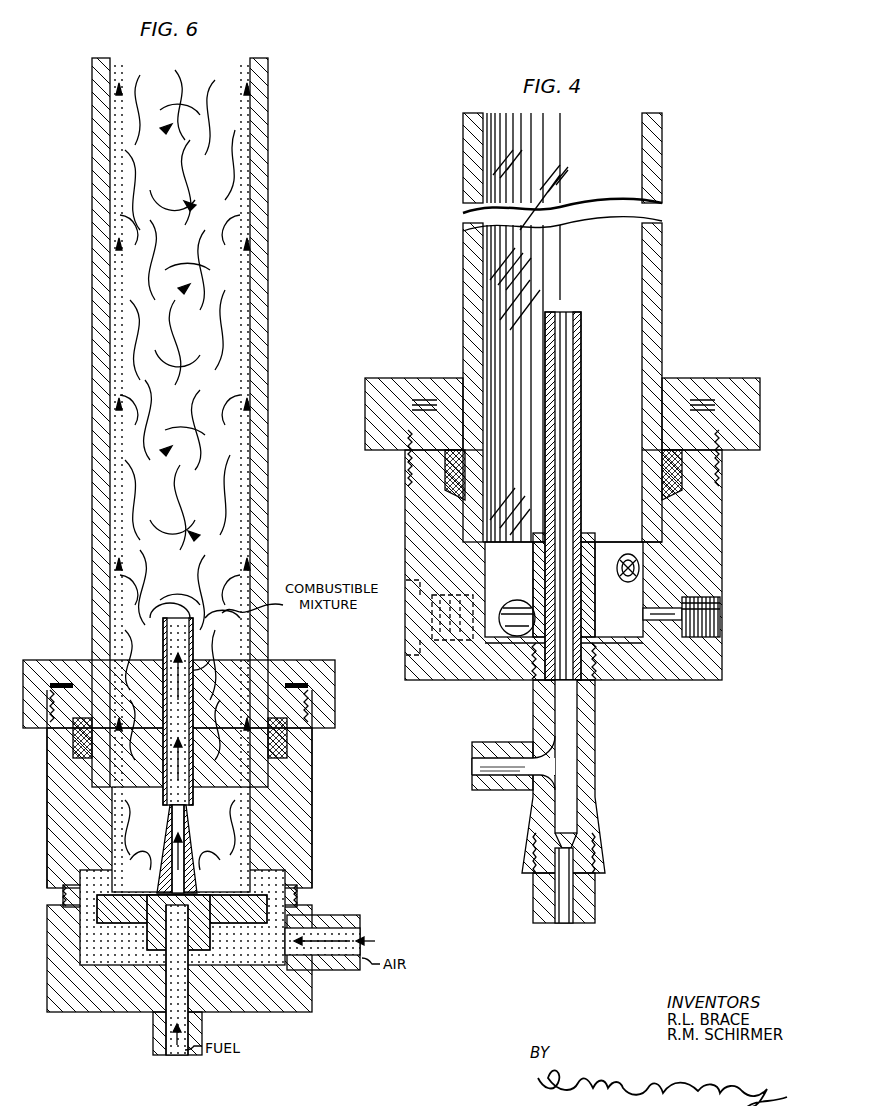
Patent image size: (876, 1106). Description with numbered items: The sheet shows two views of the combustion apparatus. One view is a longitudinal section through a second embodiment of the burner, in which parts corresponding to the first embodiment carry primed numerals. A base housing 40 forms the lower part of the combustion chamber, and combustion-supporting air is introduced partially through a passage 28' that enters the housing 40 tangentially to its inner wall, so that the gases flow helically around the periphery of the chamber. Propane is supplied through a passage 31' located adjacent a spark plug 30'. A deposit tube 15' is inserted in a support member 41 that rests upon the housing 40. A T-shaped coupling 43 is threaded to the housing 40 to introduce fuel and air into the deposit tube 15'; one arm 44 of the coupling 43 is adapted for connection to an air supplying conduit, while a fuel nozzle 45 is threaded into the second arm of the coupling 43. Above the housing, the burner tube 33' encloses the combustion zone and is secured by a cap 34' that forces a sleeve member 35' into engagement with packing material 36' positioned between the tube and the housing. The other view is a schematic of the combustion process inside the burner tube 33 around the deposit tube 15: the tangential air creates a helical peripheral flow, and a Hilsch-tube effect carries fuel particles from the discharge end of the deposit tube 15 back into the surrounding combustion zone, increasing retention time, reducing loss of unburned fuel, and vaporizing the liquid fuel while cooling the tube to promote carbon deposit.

In FIG. 6, the burner tube 33 is at (203, 422).
In FIG. 6, the deposit tube 15 is at (230, 748).
In FIG. 4, the burner tube 33' is at (589, 327).
In FIG. 4, the deposit tube 15' is at (581, 496).
In FIG. 4, the cap 34' is at (562, 404).
In FIG. 4, the sleeve member 35' is at (563, 519).
In FIG. 4, the packing material 36' is at (606, 475).
In FIG. 4, the spark plug 30' is at (619, 582).
In FIG. 4, the support member 41 is at (596, 614).
In FIG. 4, the air passage 28' is at (496, 651).
In FIG. 4, the propane passage 31' is at (678, 657).
In FIG. 4, the base housing 40 is at (715, 680).
In FIG. 4, the T-shaped coupling 43 is at (596, 812).
In FIG. 4, the arm 44 is at (503, 786).
In FIG. 4, the fuel nozzle 45 is at (596, 906).